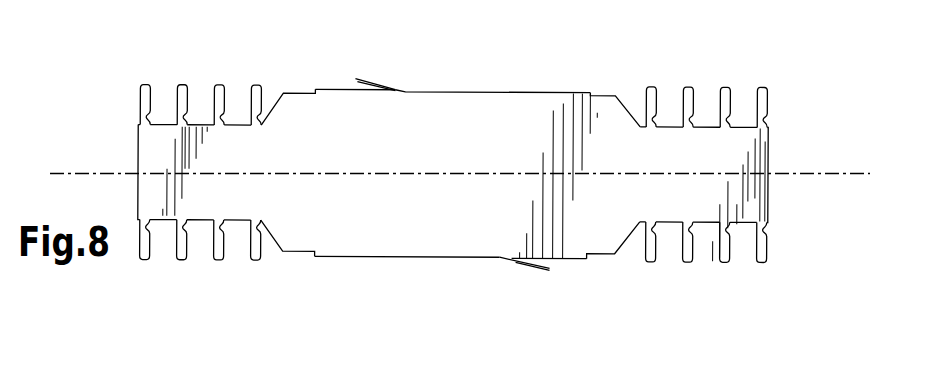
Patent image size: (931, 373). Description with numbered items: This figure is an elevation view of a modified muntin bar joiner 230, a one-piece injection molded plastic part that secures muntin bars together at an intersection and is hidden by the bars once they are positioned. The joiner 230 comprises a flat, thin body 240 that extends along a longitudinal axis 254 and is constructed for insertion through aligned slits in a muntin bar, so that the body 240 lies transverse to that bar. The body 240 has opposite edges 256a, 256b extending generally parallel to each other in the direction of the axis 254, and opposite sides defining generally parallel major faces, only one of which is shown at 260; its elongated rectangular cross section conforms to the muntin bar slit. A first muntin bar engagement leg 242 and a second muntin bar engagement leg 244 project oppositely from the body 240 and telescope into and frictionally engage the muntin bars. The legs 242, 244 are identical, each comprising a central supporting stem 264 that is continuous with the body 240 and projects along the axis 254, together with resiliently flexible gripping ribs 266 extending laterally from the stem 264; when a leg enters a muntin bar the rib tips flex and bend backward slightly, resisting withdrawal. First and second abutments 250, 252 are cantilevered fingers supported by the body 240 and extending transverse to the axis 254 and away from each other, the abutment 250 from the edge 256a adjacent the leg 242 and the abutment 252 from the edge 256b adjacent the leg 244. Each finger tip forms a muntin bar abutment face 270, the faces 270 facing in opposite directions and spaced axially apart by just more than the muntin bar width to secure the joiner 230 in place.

The muntin bar joiner 230 is at (724, 289).
The body 240 is at (528, 124).
The first muntin bar engagement leg 242 is at (173, 162).
The second muntin bar engagement leg 244 is at (743, 167).
The first abutment 250 is at (372, 82).
The second abutment 252 is at (530, 266).
The longitudinal axis 254 is at (840, 174).
The first body edge 256a is at (445, 91).
The second body edge 256b is at (358, 256).
The body side 260 is at (448, 151).
The central supporting stem 264 is at (147, 182).
The gripping ribs 266 is at (219, 100).
The muntin bar abutment face 270 is at (355, 80).